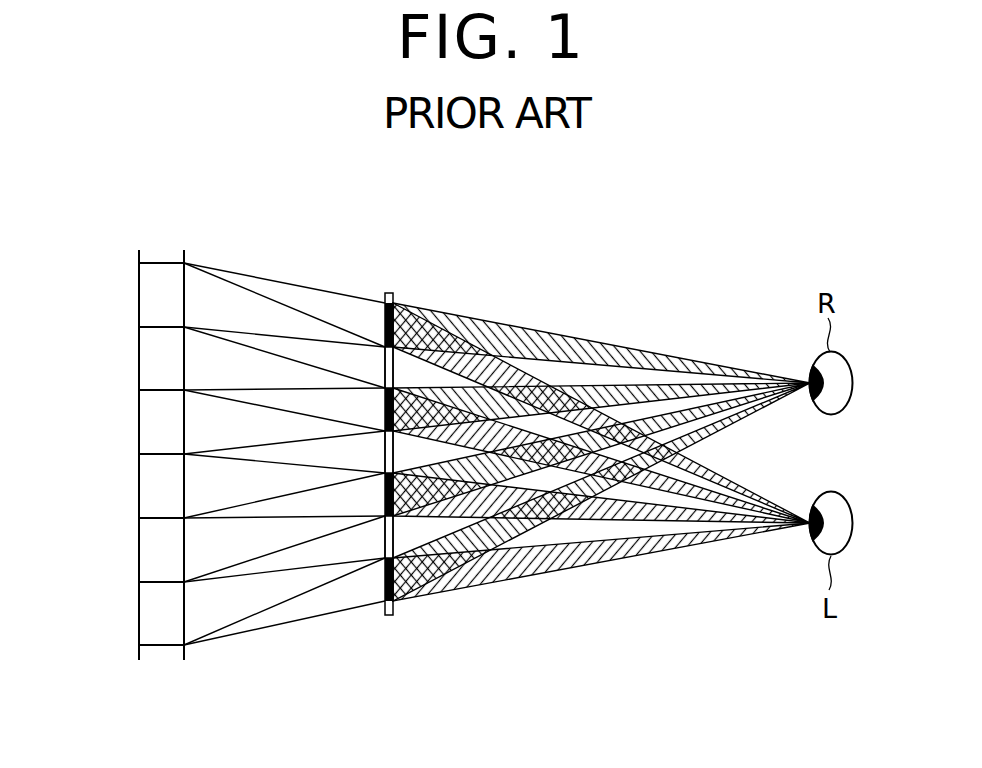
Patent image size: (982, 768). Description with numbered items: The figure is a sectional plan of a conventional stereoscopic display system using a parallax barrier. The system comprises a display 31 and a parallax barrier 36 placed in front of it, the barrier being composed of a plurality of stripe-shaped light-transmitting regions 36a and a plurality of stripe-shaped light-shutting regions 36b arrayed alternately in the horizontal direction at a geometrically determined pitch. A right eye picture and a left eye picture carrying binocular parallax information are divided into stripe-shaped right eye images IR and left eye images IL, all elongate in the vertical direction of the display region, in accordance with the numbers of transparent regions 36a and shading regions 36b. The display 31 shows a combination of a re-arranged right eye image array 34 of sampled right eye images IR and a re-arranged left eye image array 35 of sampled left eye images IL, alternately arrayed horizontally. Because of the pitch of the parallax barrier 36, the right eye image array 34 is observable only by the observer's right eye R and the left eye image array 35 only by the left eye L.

The display 31 is at (184, 656).
The re-arranged right eye image array 34 is at (139, 357).
The re-arranged left eye image array 35 is at (139, 293).
The parallax barrier 36 is at (394, 295).
The light-transmitting region 36a is at (384, 366).
The light-shutting region 36b is at (385, 320).